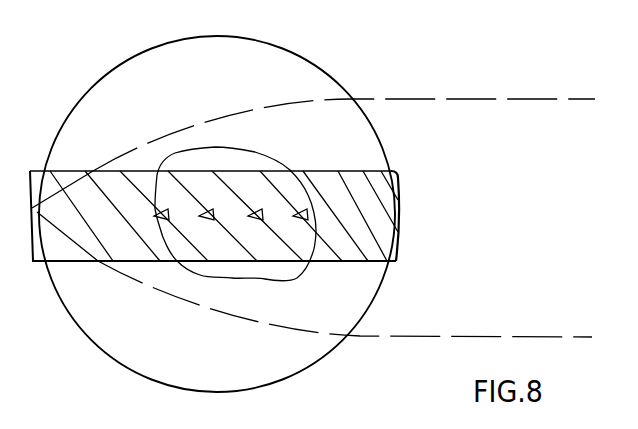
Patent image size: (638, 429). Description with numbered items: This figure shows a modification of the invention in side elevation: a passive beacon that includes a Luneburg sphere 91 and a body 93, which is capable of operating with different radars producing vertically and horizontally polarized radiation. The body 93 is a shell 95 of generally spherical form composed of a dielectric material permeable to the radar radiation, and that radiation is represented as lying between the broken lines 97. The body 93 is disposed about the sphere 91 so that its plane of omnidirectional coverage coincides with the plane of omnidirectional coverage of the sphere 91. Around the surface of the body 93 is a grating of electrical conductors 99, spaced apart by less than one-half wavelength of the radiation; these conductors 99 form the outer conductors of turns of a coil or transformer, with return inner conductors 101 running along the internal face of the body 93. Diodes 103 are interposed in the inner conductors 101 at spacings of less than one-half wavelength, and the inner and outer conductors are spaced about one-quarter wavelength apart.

The Luneburg sphere 91 is at (299, 68).
The body 93 is at (400, 226).
The shell 95 is at (316, 171).
The broken lines 97 is at (495, 336).
The electrical conductors 99 is at (105, 169).
The inner conductors 101 is at (234, 240).
The diodes 103 is at (209, 213).